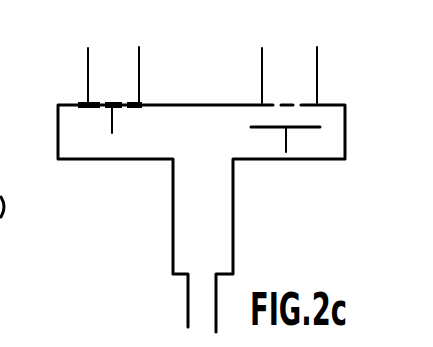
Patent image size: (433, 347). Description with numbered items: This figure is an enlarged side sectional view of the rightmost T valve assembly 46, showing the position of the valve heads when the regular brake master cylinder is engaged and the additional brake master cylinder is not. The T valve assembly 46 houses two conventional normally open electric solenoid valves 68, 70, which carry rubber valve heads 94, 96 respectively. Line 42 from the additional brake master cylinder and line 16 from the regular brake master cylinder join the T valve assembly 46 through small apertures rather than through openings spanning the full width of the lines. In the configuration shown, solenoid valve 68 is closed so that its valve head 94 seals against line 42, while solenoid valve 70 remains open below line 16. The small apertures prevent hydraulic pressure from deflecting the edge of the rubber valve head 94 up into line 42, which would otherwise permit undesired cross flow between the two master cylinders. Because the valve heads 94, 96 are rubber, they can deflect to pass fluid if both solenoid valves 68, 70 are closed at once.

The line 16 is at (318, 70).
The line 42 is at (88, 70).
The T valve assembly 46 is at (150, 186).
The solenoid valve 68 is at (109, 111).
The solenoid valve 70 is at (290, 130).
The valve head 94 is at (131, 110).
The valve head 96 is at (312, 125).